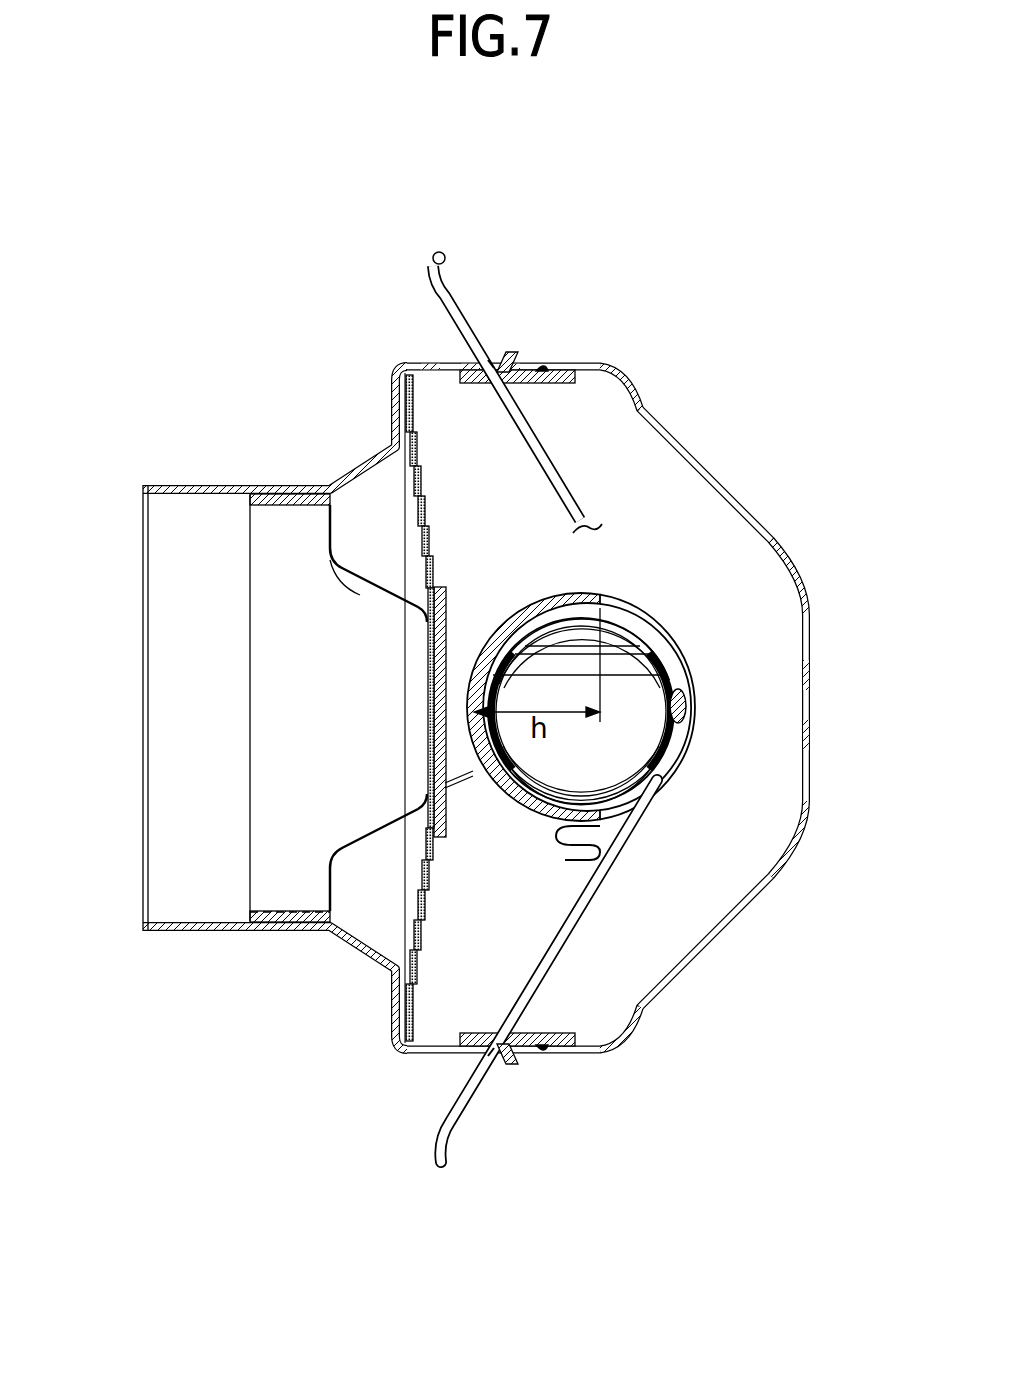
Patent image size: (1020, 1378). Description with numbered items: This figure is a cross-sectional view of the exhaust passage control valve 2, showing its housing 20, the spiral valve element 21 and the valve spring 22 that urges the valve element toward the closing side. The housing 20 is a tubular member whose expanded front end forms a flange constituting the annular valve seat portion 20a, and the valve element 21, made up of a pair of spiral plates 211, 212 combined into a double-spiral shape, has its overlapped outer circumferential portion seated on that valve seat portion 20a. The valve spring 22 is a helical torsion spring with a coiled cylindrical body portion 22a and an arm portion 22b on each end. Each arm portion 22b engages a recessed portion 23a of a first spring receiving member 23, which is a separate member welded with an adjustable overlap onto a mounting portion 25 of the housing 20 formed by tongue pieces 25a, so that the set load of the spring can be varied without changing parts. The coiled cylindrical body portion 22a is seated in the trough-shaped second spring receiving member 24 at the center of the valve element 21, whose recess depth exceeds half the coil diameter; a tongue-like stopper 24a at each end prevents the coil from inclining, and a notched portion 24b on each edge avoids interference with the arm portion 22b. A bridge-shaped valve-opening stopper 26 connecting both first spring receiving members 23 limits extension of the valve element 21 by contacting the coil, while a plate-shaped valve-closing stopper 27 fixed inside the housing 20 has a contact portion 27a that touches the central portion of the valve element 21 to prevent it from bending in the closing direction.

The exhaust passage control valve 2 is at (756, 398).
The housing 20 is at (237, 487).
The valve seat portion 20a is at (392, 1003).
The valve element 21 is at (348, 708).
The spiral plate 211 is at (300, 660).
The spiral plate 212 is at (437, 665).
The valve spring 22 is at (700, 683).
The coiled cylindrical body portion 22a is at (680, 742).
The arm portion 22b is at (455, 312).
The first spring receiving member 23 is at (537, 366).
The recessed portion 23a is at (492, 365).
The second spring receiving member 24 is at (570, 734).
The stopper 24a is at (628, 660).
The notched portion 24b is at (568, 852).
The mounting portion 25 is at (428, 360).
The tongue piece 25a is at (452, 358).
The valve-opening stopper 26 is at (810, 765).
The valve-closing stopper 27 is at (262, 792).
The contact portion 27a is at (420, 638).